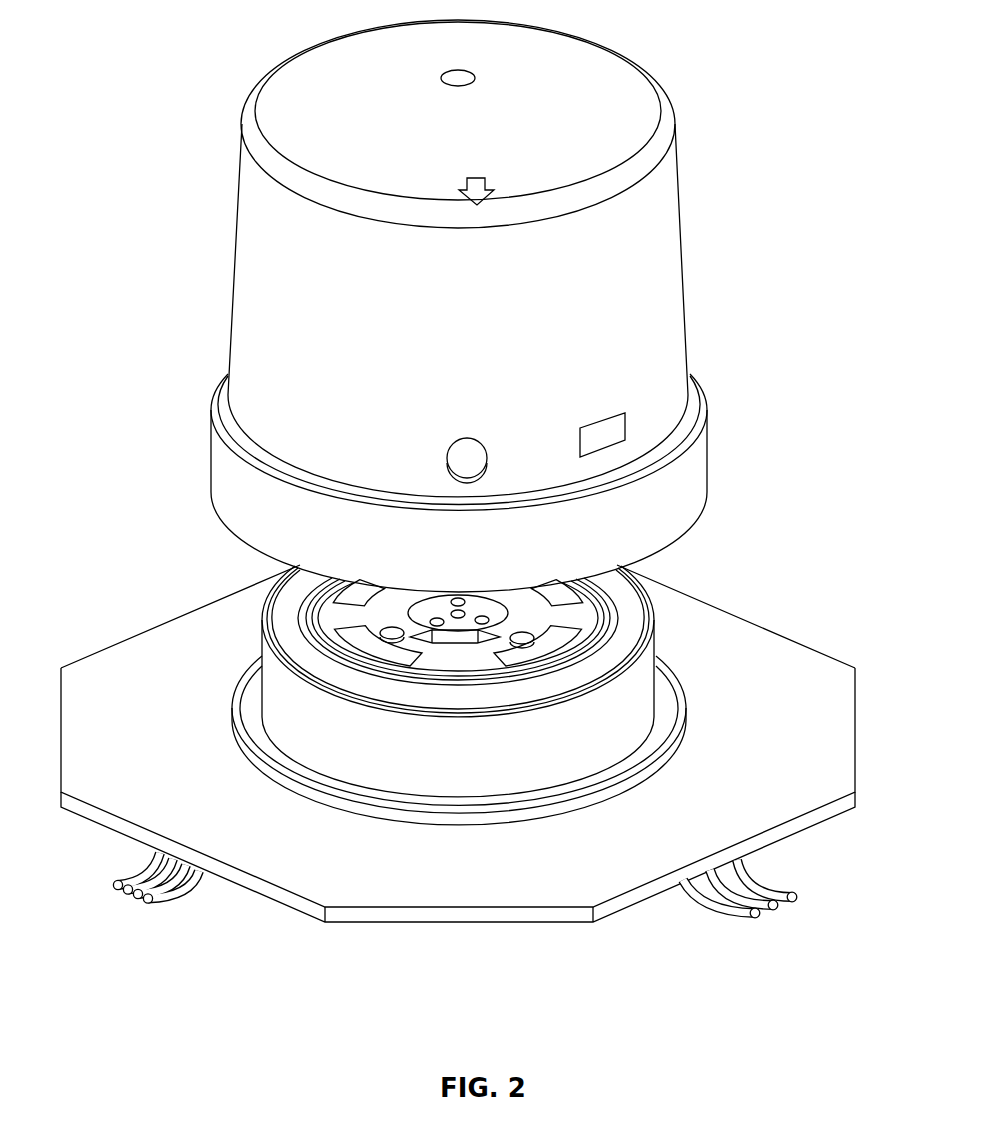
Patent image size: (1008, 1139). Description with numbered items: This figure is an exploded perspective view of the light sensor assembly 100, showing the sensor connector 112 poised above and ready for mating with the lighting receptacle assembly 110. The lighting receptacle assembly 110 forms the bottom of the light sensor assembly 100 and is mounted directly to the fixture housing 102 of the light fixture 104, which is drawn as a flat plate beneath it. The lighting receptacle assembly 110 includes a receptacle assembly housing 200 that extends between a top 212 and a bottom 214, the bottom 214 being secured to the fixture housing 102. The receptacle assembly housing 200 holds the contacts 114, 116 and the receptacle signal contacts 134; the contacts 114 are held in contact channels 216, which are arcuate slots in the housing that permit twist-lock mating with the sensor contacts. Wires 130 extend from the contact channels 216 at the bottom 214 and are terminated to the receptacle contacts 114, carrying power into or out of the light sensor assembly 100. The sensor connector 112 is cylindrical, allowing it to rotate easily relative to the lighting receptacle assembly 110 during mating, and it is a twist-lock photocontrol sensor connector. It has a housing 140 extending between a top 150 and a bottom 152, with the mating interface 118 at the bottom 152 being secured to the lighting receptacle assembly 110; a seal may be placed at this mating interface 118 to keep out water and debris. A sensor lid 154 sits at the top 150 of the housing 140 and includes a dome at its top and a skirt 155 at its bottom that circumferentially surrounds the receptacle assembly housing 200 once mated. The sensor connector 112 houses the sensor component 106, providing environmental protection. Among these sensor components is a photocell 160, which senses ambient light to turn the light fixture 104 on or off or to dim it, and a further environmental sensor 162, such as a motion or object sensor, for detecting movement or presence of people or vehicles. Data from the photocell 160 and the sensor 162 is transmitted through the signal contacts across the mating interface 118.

The light sensor assembly 100 is at (818, 245).
The fixture housing 102 is at (823, 677).
The light fixture 104 is at (850, 613).
The sensor component 106 is at (603, 410).
The lighting receptacle assembly 110 is at (657, 658).
The sensor connector 112 is at (743, 382).
The receptacle contacts 114 is at (400, 611).
The contacts 116 is at (292, 648).
The mating interface 118 is at (582, 618).
The wires 130 is at (763, 888).
The receptacle signal contacts 134 is at (168, 890).
The housing 140 is at (232, 463).
The top 150 is at (597, 80).
The bottom 152 is at (670, 549).
The sensor lid 154 is at (650, 240).
The skirt 155 is at (685, 470).
The photocell 160 is at (462, 460).
The environmental sensor 162 is at (580, 440).
The receptacle assembly housing 200 is at (287, 720).
The top 212 is at (421, 705).
The bottom 214 is at (392, 822).
The contact channels 216 is at (408, 628).